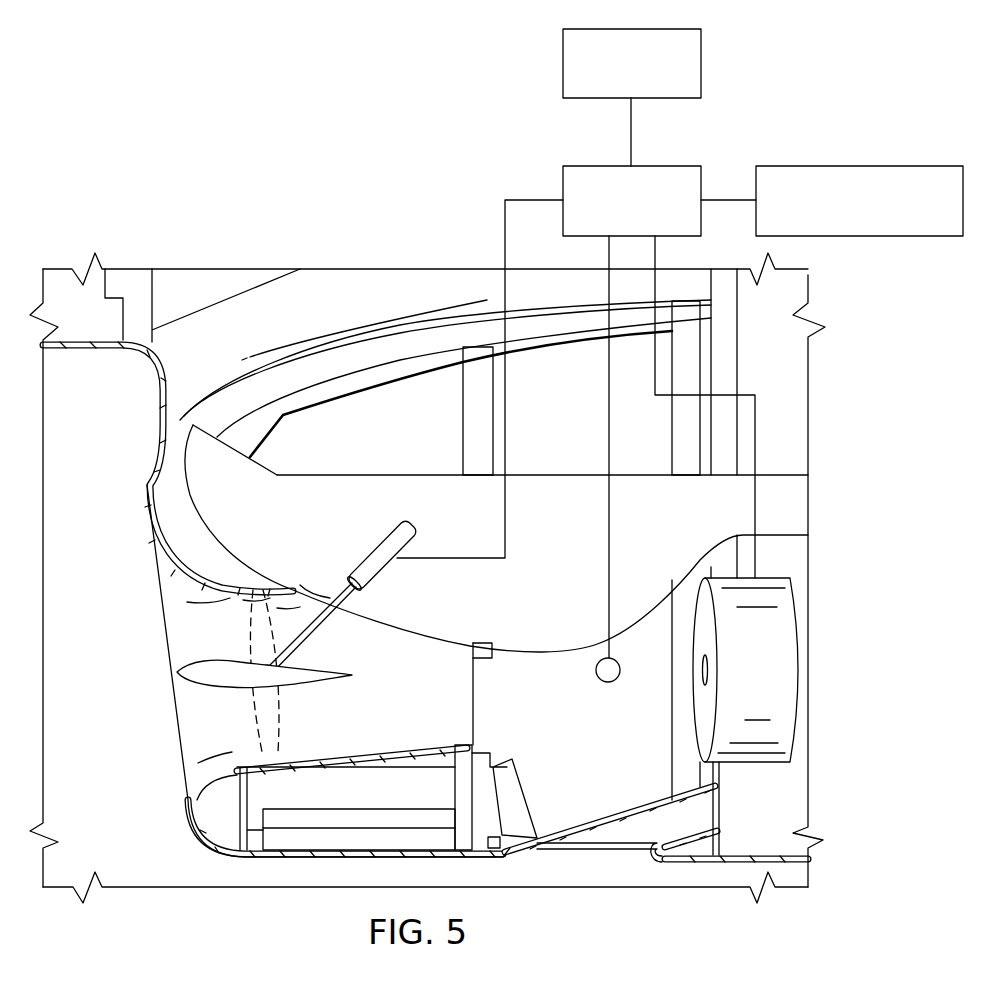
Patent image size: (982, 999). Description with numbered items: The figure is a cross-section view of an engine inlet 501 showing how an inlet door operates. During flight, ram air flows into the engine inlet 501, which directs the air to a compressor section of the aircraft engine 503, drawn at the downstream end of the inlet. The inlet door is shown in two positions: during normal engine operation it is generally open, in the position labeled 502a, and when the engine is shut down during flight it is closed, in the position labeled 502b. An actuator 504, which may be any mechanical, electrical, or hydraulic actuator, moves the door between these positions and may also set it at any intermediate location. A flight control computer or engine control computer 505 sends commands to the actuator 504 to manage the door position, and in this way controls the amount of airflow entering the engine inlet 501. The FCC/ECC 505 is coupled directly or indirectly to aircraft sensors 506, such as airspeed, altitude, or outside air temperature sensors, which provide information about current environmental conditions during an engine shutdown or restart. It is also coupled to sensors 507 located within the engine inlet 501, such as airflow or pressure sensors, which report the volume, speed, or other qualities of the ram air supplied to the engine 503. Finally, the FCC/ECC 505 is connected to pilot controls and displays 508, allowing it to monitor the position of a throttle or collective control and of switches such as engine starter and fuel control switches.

The engine inlet 501 is at (183, 627).
The inlet door open position 502a is at (233, 688).
The inlet door closed position 502b is at (278, 700).
The aircraft engine 503 is at (750, 763).
The actuator 504 is at (378, 547).
The flight control computer or engine control computer (FCC/ECC) 505 is at (665, 165).
The aircraft sensors 506 is at (702, 63).
The inlet sensors 507 is at (606, 683).
The pilot controls and displays 508 is at (860, 166).